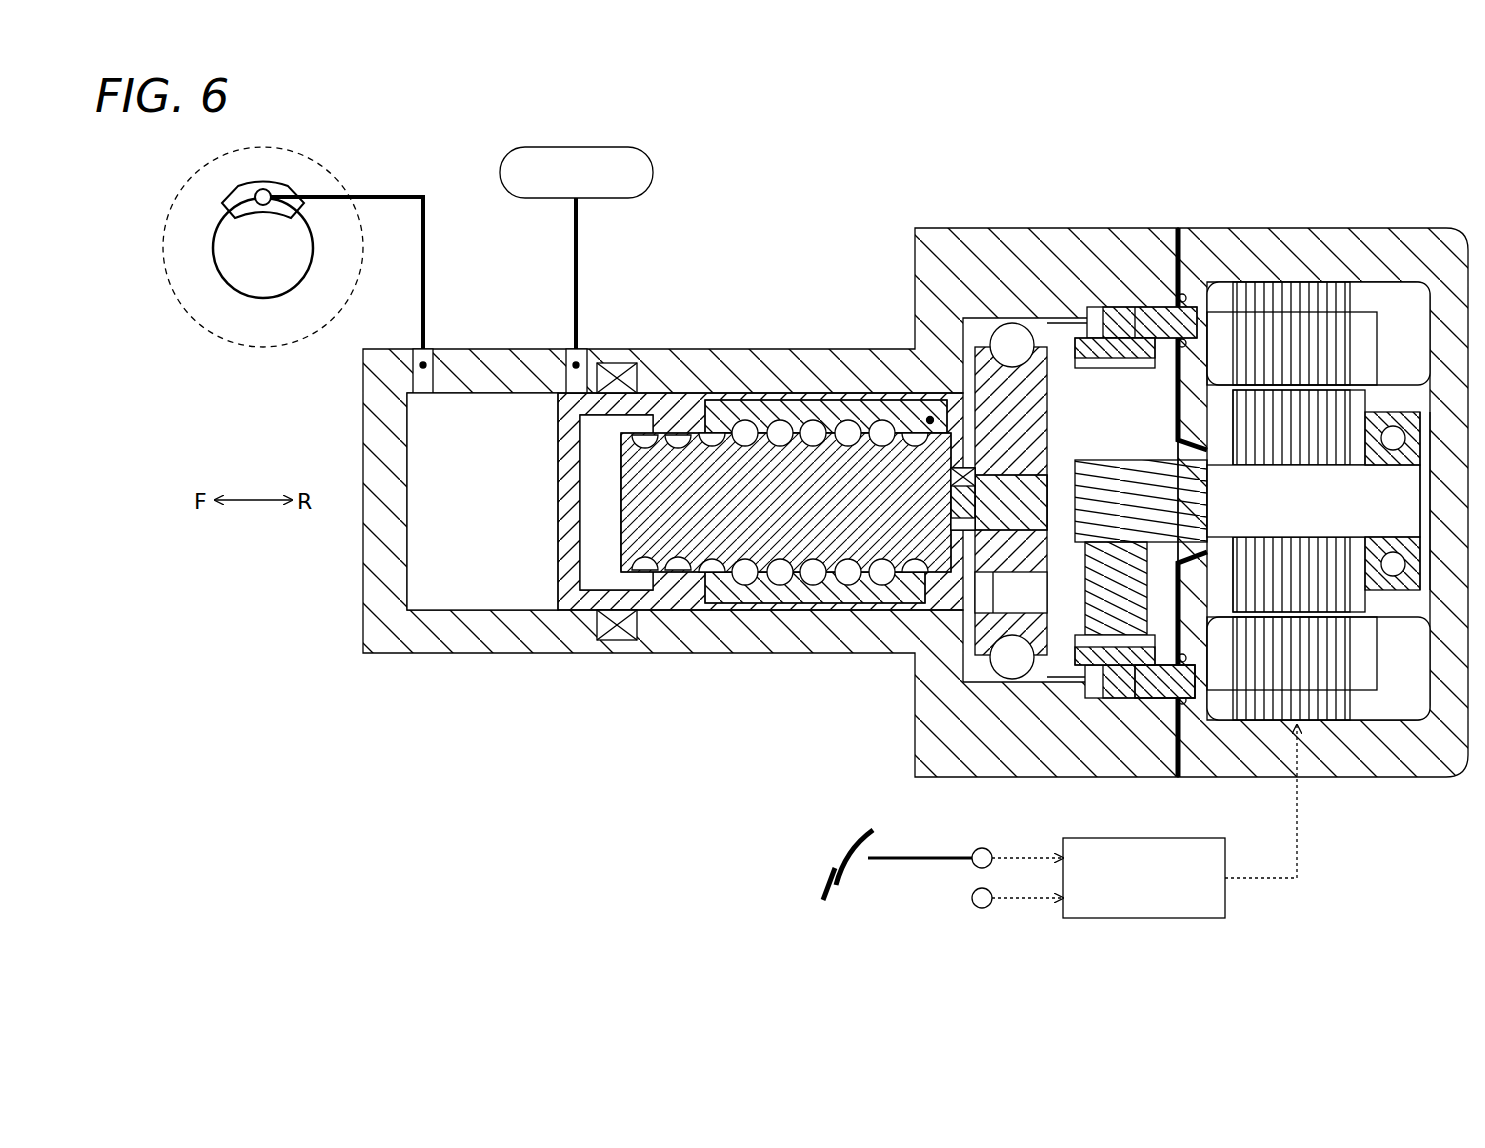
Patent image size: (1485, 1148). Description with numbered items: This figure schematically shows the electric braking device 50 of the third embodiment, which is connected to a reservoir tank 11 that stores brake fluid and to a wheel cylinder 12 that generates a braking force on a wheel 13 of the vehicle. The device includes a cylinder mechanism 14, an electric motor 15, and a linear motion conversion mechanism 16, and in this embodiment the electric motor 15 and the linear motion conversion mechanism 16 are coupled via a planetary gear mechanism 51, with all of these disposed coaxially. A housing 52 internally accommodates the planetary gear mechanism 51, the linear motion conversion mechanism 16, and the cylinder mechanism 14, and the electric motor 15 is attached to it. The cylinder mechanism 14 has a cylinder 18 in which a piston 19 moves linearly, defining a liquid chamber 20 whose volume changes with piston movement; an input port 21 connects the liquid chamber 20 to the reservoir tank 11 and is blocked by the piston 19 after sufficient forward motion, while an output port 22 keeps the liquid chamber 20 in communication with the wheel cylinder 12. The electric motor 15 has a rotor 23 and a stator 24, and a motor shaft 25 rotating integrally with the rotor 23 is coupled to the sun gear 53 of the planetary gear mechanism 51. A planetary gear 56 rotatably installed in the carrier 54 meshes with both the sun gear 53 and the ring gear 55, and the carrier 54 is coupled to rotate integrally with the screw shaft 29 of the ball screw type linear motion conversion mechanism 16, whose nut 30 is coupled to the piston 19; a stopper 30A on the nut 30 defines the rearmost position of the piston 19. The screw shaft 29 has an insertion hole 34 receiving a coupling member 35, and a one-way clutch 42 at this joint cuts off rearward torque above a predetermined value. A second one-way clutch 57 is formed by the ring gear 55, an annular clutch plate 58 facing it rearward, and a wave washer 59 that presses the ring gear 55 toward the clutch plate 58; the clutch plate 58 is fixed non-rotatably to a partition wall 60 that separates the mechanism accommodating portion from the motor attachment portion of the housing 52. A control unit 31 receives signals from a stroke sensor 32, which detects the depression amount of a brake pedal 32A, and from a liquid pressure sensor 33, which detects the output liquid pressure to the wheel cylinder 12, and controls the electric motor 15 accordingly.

The reservoir tank 11 is at (655, 172).
The wheel cylinder 12 is at (255, 192).
The wheel 13 is at (263, 347).
The cylinder mechanism 14 is at (487, 350).
The electric motor 15 is at (1367, 705).
The linear motion conversion mechanism 16 is at (765, 615).
The cylinder 18 is at (500, 608).
The piston 19 is at (570, 462).
The liquid chamber 20 is at (482, 501).
The input port 21 is at (570, 360).
The output port 22 is at (420, 360).
The rotor 23 is at (1300, 540).
The stator 24 is at (1355, 338).
The motor shaft 25 is at (1297, 545).
The screw shaft 29 is at (745, 403).
The nut 30 is at (795, 413).
The stopper 30A is at (930, 420).
The control unit 31 is at (1225, 905).
The stroke sensor 32 is at (982, 848).
The brake pedal 32A is at (832, 875).
The liquid pressure sensor 33 is at (972, 898).
The insertion hole 34 is at (960, 527).
The coupling member 35 is at (960, 503).
The one-way clutch 42 is at (955, 475).
The electric braking device 50 is at (662, 724).
The planetary gear mechanism 51 is at (1063, 330).
The housing 52 is at (1005, 228).
The sun gear 53 is at (1135, 470).
The carrier 54 is at (1030, 450).
The ring gear 55 is at (1112, 368).
The planetary gear 56 is at (1130, 590).
The one-way clutch 57 is at (1118, 700).
The clutch plate 58 is at (1150, 690).
The wave washer 59 is at (1100, 310).
The partition wall 60 is at (1181, 415).